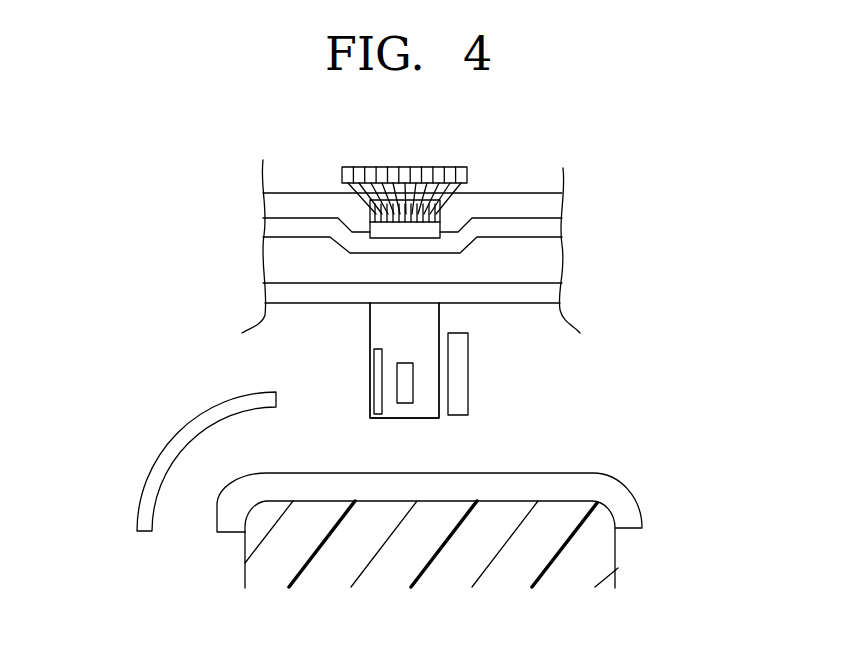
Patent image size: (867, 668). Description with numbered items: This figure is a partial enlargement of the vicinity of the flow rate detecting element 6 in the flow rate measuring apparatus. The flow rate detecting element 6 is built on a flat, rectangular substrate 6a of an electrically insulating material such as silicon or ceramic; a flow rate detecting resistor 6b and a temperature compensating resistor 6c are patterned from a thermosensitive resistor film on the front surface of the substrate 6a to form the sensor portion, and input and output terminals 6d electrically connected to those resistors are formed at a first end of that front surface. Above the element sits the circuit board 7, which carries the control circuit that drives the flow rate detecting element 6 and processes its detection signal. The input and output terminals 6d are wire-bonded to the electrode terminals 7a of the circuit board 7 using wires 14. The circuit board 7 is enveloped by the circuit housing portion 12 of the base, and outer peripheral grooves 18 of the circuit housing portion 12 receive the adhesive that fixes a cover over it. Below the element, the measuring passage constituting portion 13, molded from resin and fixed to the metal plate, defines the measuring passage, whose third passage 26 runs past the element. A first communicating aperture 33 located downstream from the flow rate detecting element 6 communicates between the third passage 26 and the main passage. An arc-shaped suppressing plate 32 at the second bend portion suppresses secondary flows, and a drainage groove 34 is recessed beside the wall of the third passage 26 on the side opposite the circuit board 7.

The circuit board 7 is at (532, 177).
The electrode terminals 7a is at (342, 177).
The wires 14 is at (362, 190).
The input and output terminals 6d is at (366, 207).
The circuit housing portion 12 is at (556, 230).
The outer peripheral grooves 18 is at (537, 257).
The flow rate detecting element 6 is at (450, 320).
The substrate 6a is at (387, 329).
The flow rate detecting resistor 6b is at (403, 378).
The temperature compensating resistor 6c is at (377, 388).
The first communicating aperture 33 is at (462, 368).
The third passage 26 is at (543, 407).
The arc-shaped suppressing plate 32 is at (170, 445).
The drainage groove 34 is at (587, 487).
The measuring passage constituting portion 13 is at (588, 562).